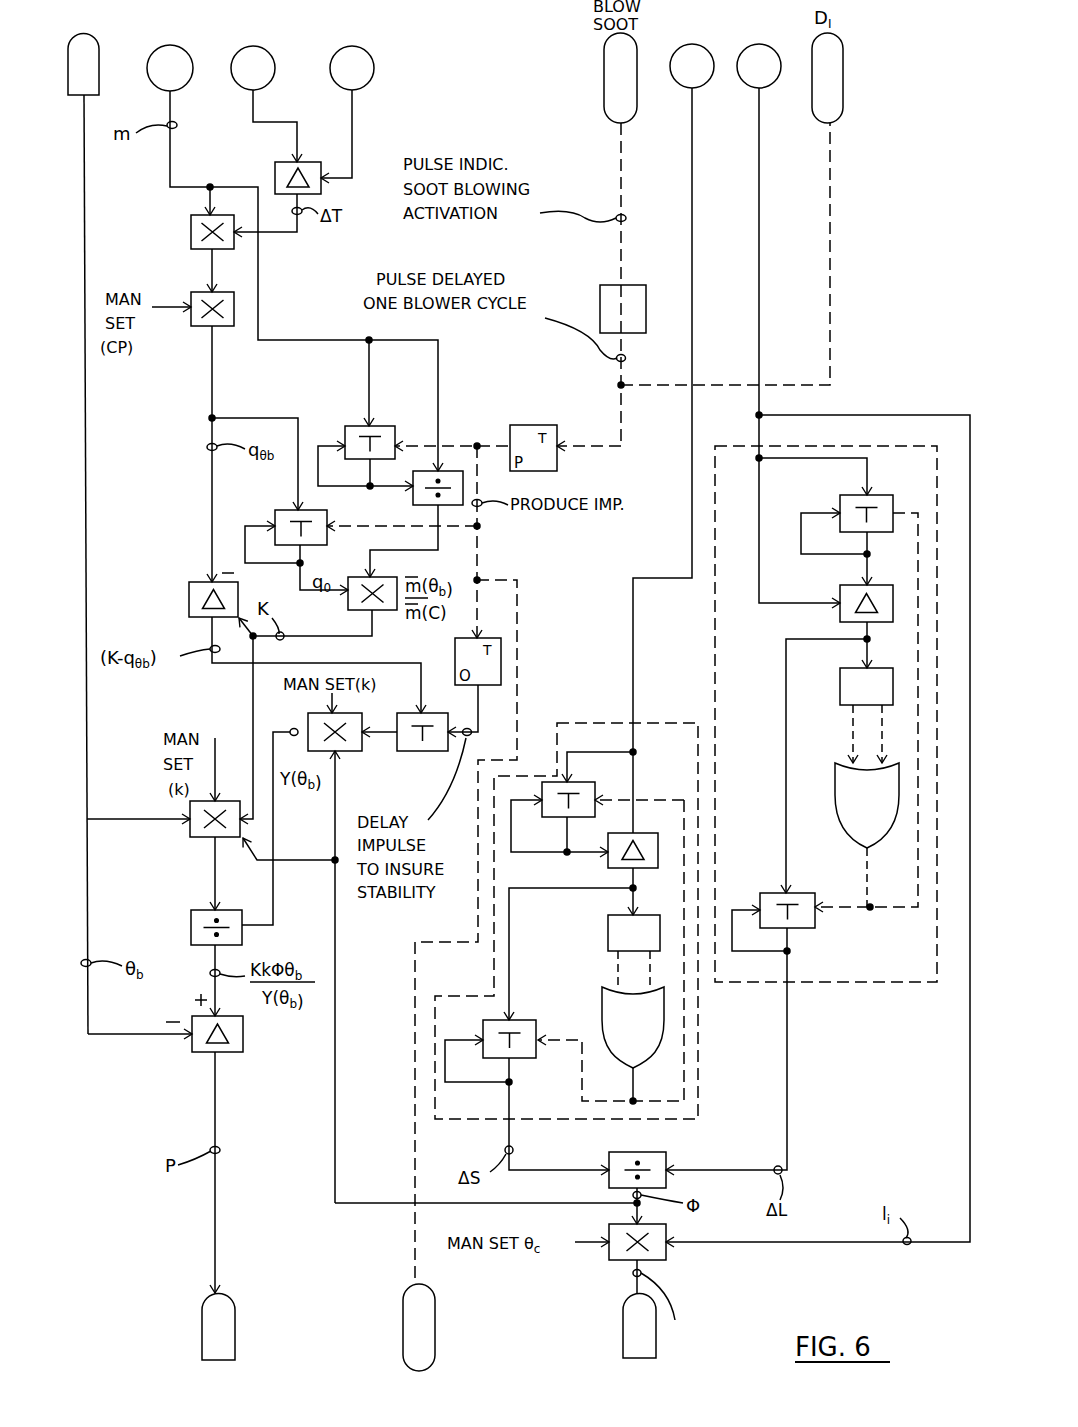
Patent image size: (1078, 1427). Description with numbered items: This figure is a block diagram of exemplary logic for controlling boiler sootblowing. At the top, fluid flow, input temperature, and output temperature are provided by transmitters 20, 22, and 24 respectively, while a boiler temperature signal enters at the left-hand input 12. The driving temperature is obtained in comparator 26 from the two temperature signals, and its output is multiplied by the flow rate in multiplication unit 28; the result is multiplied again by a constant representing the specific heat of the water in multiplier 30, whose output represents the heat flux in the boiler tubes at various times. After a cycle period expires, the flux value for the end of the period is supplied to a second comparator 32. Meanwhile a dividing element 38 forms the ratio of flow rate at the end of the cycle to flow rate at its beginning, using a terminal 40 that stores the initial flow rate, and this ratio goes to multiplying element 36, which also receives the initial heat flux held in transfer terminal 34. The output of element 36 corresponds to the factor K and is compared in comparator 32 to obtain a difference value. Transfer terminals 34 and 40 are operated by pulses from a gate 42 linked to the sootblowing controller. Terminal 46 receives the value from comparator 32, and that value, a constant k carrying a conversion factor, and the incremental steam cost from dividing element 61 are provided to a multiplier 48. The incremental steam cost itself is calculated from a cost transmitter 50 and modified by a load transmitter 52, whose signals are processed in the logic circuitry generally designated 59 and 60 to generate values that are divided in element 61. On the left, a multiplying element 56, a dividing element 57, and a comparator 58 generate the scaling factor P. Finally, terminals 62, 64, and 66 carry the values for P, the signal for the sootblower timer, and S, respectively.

The boiler temperature signal θb 12 is at (99, 42).
The transmitter 20 is at (190, 46).
The transmitter 22 is at (272, 48).
The transmitter 24 is at (372, 48).
The comparator 26 is at (276, 178).
The multiplication unit 28 is at (190, 238).
The multiplier 30 is at (222, 327).
The second comparator 32 is at (200, 582).
The transfer terminal 34 is at (285, 510).
The multiplying element 36 is at (385, 610).
The dividing element 38 is at (456, 471).
The terminal 40 is at (355, 426).
The gate 42 is at (632, 285).
The terminal 46 is at (407, 751).
The multiplier 48 is at (308, 722).
The cost transmitter 50 is at (681, 86).
The load transmitter 52 is at (749, 86).
The multiplying element 56 is at (205, 838).
The dividing element 57 is at (200, 910).
The comparator 58 is at (243, 1040).
The logic circuitry 59 is at (592, 718).
The logic circuitry 60 is at (733, 442).
The dividing element 61 is at (655, 1152).
The terminal 62 is at (205, 1295).
The terminal 64 is at (404, 1290).
The terminal 66 is at (622, 1300).